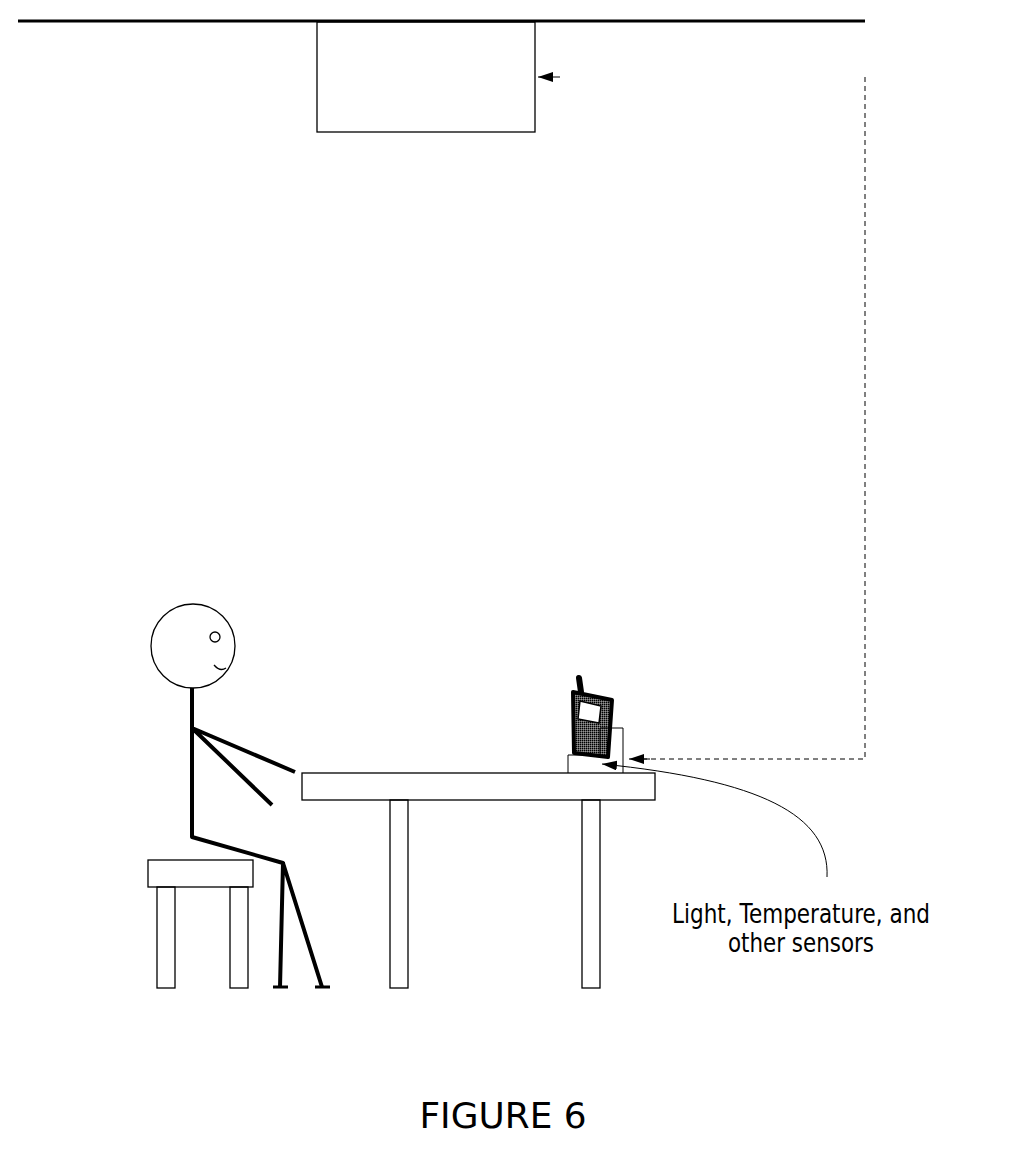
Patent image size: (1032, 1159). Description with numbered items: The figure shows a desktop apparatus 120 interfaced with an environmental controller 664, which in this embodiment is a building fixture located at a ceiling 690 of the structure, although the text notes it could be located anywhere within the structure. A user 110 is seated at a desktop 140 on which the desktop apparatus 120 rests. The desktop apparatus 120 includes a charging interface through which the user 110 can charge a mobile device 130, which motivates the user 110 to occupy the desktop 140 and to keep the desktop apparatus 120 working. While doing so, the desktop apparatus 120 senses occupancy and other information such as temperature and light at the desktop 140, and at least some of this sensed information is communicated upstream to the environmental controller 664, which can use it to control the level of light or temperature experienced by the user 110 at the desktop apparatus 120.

The ceiling 690 is at (262, 22).
The environmental controller 664 is at (412, 123).
The user 110 is at (171, 710).
The desktop 140 is at (435, 783).
The desktop apparatus 120 is at (620, 753).
The mobile device 130 is at (566, 690).